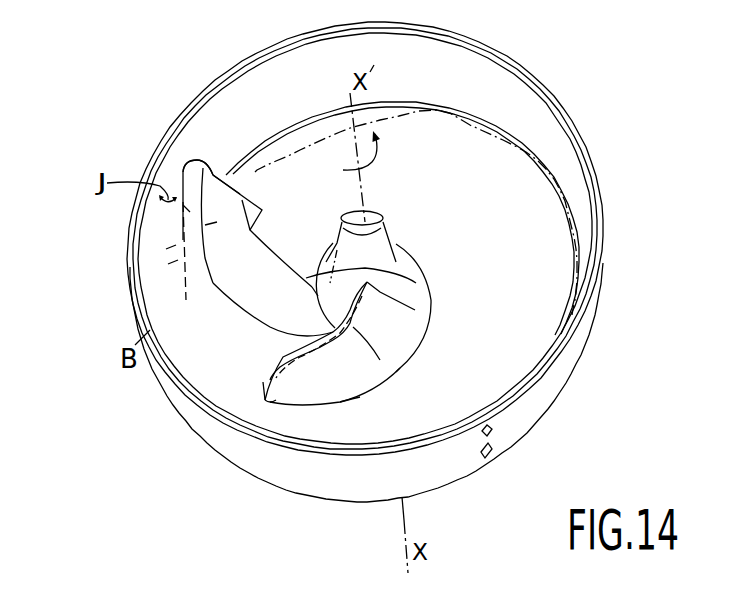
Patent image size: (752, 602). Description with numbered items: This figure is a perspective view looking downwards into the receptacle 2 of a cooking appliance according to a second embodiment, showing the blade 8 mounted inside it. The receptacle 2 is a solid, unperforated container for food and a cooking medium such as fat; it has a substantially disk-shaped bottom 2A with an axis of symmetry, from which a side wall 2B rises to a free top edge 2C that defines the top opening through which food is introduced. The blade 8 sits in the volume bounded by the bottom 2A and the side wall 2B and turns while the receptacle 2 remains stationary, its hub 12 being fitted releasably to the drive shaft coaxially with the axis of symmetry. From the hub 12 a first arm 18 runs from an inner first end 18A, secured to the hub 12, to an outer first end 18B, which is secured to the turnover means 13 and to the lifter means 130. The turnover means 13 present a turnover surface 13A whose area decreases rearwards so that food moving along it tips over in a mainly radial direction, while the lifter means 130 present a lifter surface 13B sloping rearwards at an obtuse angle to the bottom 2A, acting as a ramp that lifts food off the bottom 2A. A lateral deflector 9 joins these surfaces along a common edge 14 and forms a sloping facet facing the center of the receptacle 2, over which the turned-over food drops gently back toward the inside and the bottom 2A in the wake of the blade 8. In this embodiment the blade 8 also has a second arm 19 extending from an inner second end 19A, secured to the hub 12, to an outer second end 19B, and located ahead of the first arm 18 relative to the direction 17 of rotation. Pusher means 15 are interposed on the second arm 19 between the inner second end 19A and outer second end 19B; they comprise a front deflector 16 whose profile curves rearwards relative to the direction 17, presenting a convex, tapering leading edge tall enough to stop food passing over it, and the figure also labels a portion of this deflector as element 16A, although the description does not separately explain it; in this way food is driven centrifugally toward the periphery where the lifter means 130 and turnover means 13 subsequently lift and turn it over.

The receptacle 2 is at (567, 108).
The bottom 2A is at (294, 150).
The side wall 2B is at (280, 87).
The free top edge 2C is at (502, 56).
The blade 8 is at (403, 372).
The lateral deflector 9 is at (162, 252).
The hub 12 is at (380, 207).
The turnover means 13 is at (172, 268).
The turnover surface 13A is at (183, 212).
The lifter surface 13B is at (217, 222).
The lifter means 130 is at (165, 268).
The common edge 14 is at (187, 200).
The pusher means 15 is at (353, 356).
The front deflector 16 is at (380, 338).
The lower edge of blade 16A is at (380, 360).
The direction of movement 17 is at (338, 170).
The first arm 18 is at (260, 290).
The inner first end 18A is at (395, 271).
The outer first end 18B is at (233, 190).
The second arm 19 is at (298, 383).
The inner second end 19A is at (431, 284).
The outer second end 19B is at (263, 382).